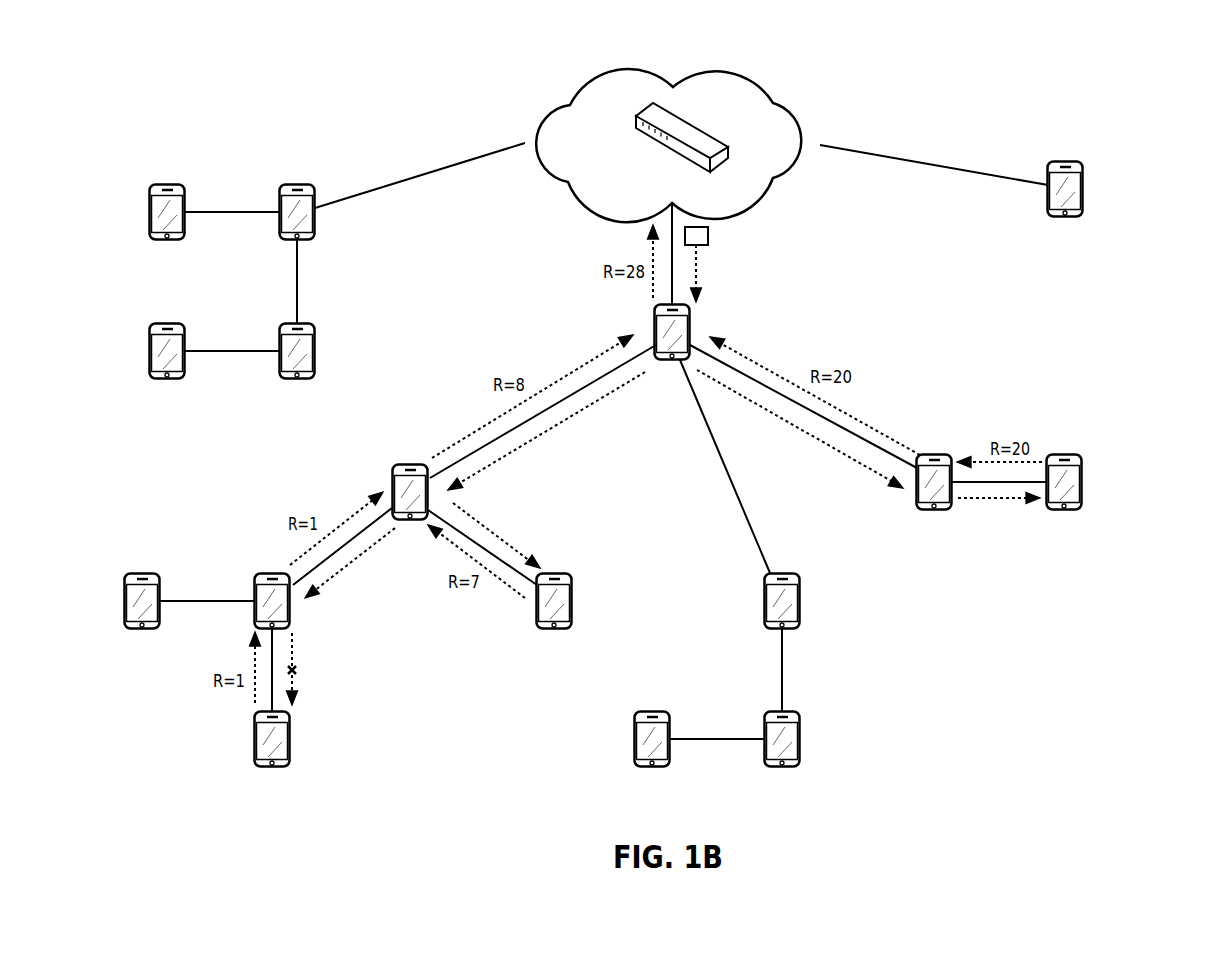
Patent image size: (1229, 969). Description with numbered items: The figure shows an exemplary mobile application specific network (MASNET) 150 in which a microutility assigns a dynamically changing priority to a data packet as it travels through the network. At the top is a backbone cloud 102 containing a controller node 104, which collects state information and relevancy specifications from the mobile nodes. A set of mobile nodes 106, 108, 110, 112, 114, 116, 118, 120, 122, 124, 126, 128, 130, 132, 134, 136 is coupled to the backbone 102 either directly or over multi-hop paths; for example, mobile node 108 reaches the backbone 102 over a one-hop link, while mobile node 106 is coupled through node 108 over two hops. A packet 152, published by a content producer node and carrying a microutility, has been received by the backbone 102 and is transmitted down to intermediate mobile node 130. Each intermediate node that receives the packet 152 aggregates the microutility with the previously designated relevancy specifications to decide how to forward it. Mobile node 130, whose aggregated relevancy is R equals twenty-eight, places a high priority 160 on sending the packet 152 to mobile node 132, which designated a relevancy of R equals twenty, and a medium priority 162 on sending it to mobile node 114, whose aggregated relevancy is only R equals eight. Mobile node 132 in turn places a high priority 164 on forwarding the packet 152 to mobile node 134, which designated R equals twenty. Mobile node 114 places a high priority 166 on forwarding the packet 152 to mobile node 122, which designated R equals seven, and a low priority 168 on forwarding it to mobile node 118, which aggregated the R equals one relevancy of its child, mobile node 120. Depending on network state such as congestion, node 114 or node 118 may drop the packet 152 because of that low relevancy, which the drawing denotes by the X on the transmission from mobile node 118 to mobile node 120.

The backbone cloud 102 is at (773, 98).
The controller node 104 is at (666, 150).
The mobile node 106 is at (176, 240).
The mobile node 108 is at (305, 242).
The mobile node 110 is at (305, 379).
The mobile node 112 is at (176, 379).
The mobile node 114 is at (393, 480).
The mobile node 116 is at (151, 628).
The mobile node 118 is at (289, 612).
The mobile node 120 is at (282, 766).
The mobile node 122 is at (564, 628).
The mobile node 124 is at (793, 628).
The mobile node 126 is at (793, 766).
The mobile node 128 is at (663, 766).
The mobile node 130 is at (675, 362).
The mobile node 132 is at (918, 504).
The mobile node 134 is at (1075, 509).
The mobile node 136 is at (1075, 216).
The mobile application specific network 150 is at (1144, 59).
The packet 152 is at (708, 236).
The high priority 160 is at (828, 447).
The medium priority 162 is at (524, 444).
The high priority 164 is at (1012, 499).
The high priority 166 is at (542, 527).
The low priority 168 is at (337, 574).